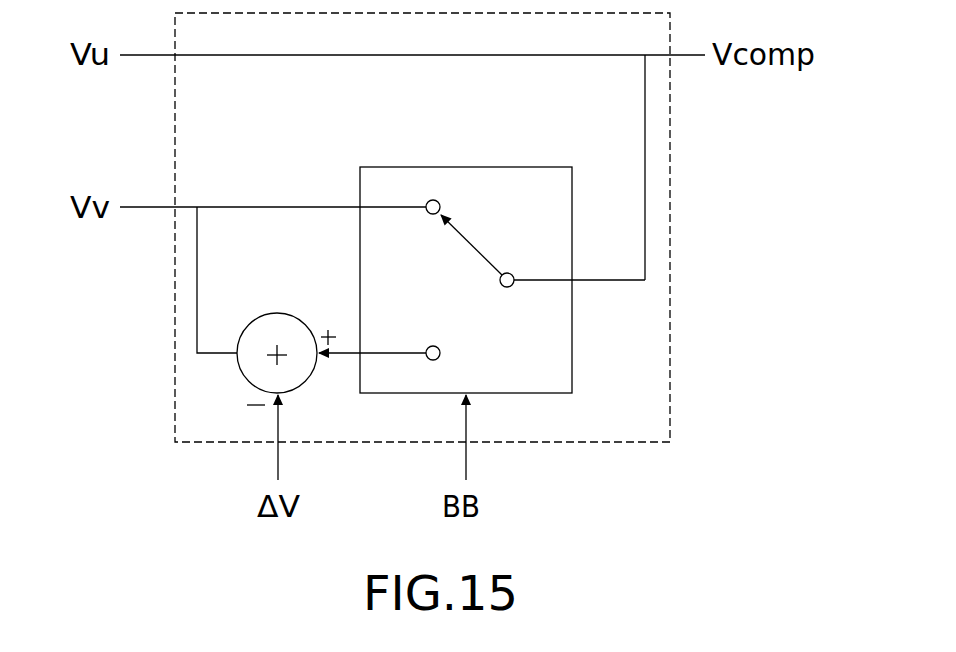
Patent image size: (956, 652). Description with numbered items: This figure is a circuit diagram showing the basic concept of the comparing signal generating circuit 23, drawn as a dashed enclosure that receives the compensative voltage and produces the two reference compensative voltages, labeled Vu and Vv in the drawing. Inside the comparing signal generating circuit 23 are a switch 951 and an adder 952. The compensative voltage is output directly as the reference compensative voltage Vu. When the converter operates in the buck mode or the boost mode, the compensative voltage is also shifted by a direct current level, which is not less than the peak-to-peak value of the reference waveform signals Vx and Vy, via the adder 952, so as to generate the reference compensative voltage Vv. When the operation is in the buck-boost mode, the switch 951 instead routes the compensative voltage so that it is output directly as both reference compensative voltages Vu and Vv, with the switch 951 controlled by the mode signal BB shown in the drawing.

The comparing signal generating circuit 23 is at (663, 555).
The switch 951 is at (400, 167).
The adder 952 is at (277, 313).